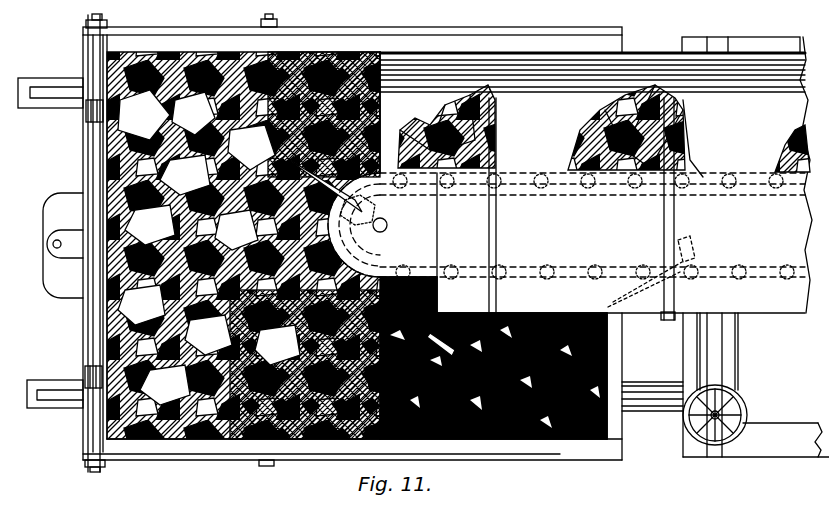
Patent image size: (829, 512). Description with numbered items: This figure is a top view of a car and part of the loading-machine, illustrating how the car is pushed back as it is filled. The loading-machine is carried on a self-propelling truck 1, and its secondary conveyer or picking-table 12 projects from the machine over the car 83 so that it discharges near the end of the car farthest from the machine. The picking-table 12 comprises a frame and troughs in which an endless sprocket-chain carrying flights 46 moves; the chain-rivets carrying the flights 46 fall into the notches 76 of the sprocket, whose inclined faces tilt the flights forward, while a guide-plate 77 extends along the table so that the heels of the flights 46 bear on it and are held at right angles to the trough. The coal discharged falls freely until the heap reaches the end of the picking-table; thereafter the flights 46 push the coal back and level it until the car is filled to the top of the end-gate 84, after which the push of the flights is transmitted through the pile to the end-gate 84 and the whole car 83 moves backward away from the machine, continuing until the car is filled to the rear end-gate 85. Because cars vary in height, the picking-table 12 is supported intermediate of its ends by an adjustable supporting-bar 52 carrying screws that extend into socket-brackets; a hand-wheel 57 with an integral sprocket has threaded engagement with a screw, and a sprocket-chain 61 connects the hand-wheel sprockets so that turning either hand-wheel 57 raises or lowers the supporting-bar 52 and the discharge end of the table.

The truck 1 is at (780, 445).
The secondary conveyer 12 is at (596, 175).
The flights 46 is at (497, 147).
The supporting-bar 52 is at (720, 368).
The hand-wheel 57 is at (745, 408).
The sprocket-chain 61 is at (736, 340).
The notches 76 is at (395, 215).
The guide-plate 77 is at (548, 197).
The car 83 is at (575, 450).
The end-gate 84 is at (60, 243).
The rear end-gate 85 is at (607, 362).